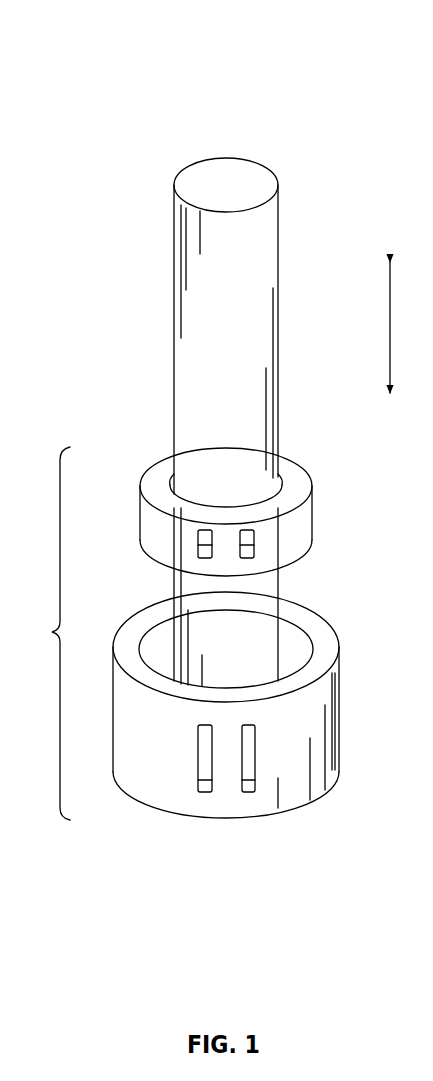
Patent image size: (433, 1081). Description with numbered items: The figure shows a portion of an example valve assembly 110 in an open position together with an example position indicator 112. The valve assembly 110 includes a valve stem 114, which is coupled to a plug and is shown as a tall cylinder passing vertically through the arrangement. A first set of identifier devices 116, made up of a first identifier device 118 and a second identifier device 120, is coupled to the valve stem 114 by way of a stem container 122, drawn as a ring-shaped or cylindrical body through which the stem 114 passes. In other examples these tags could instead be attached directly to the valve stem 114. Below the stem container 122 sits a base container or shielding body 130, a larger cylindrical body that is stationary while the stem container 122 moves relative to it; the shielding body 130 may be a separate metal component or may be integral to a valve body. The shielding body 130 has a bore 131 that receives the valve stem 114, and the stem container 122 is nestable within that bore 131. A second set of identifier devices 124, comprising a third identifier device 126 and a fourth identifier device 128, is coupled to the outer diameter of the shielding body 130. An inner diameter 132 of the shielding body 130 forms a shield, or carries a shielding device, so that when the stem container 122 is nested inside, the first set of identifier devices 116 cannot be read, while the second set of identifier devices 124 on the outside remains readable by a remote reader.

The valve assembly 110 is at (187, 92).
The position indicator 112 is at (39, 633).
The valve stem 114 is at (273, 288).
The first set of identifier devices 116 is at (227, 545).
The first identifier device 118 is at (198, 559).
The second identifier device 120 is at (254, 559).
The stem container 122 is at (313, 507).
The second set of identifier devices 124 is at (233, 800).
The third identifier device 126 is at (203, 793).
The fourth identifier device 128 is at (250, 793).
The shielding body 130 is at (333, 636).
The bore 131 is at (303, 641).
The inner diameter 132 is at (152, 647).